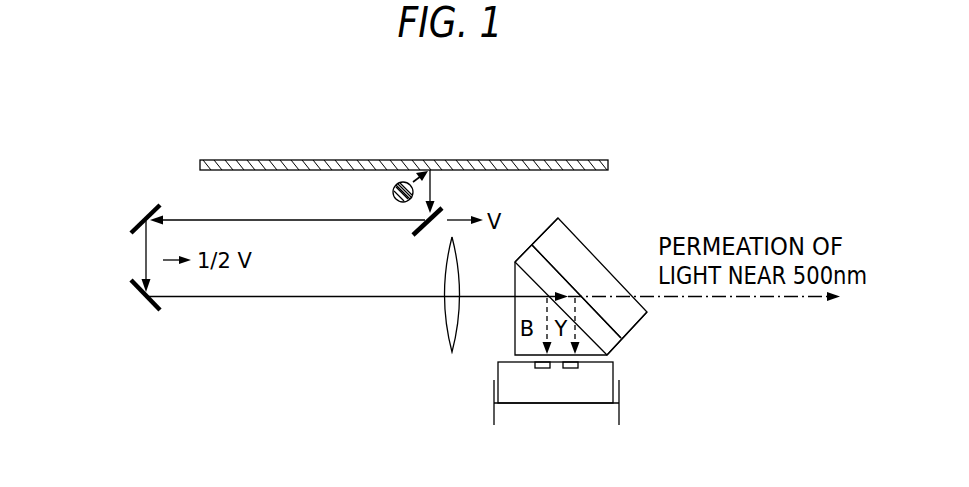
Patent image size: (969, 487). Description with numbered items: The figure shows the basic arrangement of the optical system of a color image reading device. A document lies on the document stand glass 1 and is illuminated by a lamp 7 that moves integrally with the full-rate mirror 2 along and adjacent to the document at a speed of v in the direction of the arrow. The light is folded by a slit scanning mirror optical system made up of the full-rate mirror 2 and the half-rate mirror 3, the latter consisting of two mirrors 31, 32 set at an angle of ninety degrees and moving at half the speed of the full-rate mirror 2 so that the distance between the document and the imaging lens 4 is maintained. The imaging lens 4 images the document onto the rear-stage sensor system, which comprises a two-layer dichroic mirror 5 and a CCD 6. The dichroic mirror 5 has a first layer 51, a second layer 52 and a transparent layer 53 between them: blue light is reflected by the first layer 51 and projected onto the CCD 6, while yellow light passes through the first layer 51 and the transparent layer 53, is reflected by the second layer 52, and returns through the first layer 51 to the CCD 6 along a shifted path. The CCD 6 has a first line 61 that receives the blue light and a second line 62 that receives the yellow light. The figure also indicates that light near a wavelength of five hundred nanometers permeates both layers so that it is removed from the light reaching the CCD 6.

The document stand glass 1 is at (597, 158).
The full-rate mirror 2 is at (441, 212).
The half-rate mirror 3 is at (54, 284).
The mirror 31 is at (140, 216).
The mirror 32 is at (138, 302).
The imaging lens 4 is at (440, 347).
The two-layer dichroic mirror 5 is at (595, 268).
The first layer 51 is at (527, 283).
The second layer 52 is at (613, 340).
The transparent layer 53 is at (598, 320).
The CCD 6 is at (607, 372).
The first line 61 is at (545, 369).
The second line 62 is at (572, 369).
The lamp 7 is at (393, 190).